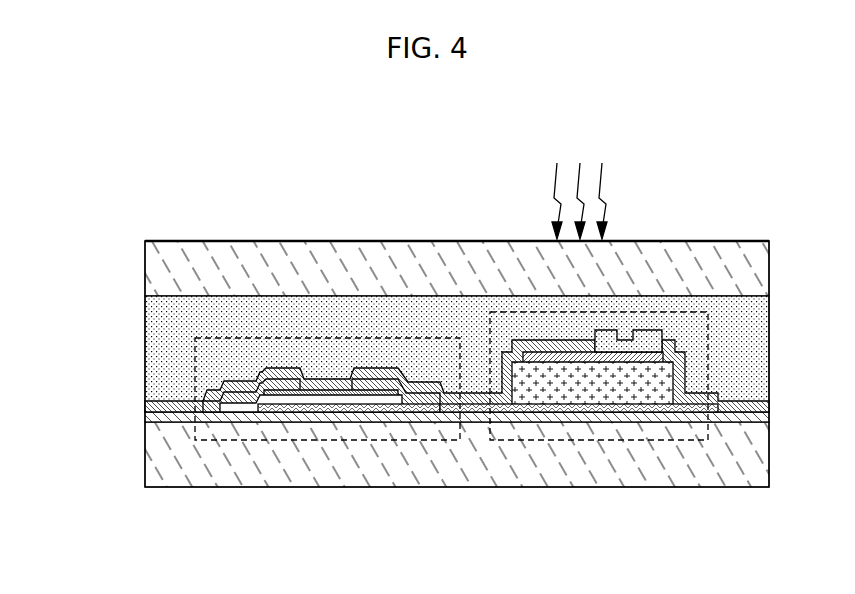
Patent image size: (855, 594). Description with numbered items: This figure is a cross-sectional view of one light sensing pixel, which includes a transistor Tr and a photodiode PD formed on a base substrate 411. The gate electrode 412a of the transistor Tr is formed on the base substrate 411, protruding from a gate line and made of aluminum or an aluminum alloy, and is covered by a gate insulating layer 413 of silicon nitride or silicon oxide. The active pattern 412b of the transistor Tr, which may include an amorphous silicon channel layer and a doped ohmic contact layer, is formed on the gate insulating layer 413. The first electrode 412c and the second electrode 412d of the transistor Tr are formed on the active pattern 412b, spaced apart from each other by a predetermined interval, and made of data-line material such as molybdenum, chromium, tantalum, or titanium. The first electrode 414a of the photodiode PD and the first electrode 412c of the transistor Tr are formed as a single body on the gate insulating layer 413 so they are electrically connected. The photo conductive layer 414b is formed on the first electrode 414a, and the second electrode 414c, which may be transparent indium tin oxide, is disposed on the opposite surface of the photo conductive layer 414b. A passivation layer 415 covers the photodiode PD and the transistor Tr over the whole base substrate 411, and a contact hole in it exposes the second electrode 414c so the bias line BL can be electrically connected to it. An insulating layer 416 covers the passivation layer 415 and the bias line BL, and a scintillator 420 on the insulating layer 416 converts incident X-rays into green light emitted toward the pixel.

The base substrate 411 is at (150, 462).
The gate insulating layer 413 is at (150, 413).
The passivation layer 415 is at (150, 399).
The insulating layer 416 is at (152, 328).
The scintillator 420 is at (150, 270).
The gate electrode 412a is at (330, 410).
The active pattern 412b is at (262, 405).
The first electrode 412c is at (428, 410).
The second electrode 412d is at (220, 418).
The first electrode 414a is at (611, 405).
The photo conductive layer 414b is at (647, 387).
The second electrode 414c is at (543, 360).
The transistor Tr is at (336, 340).
The photodiode PD is at (516, 312).
The bias line BL is at (652, 330).